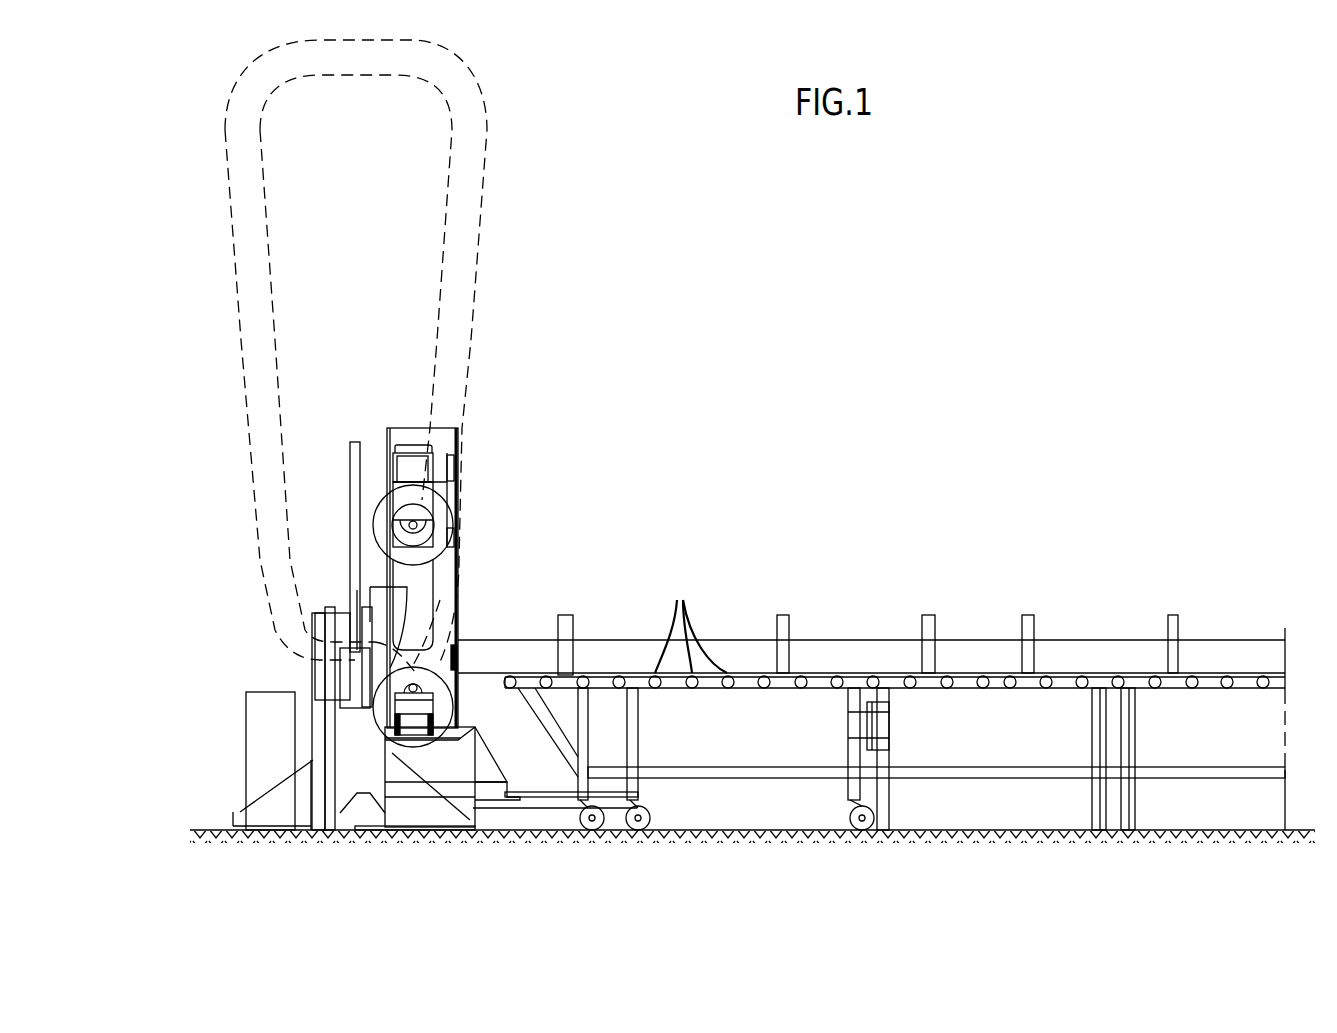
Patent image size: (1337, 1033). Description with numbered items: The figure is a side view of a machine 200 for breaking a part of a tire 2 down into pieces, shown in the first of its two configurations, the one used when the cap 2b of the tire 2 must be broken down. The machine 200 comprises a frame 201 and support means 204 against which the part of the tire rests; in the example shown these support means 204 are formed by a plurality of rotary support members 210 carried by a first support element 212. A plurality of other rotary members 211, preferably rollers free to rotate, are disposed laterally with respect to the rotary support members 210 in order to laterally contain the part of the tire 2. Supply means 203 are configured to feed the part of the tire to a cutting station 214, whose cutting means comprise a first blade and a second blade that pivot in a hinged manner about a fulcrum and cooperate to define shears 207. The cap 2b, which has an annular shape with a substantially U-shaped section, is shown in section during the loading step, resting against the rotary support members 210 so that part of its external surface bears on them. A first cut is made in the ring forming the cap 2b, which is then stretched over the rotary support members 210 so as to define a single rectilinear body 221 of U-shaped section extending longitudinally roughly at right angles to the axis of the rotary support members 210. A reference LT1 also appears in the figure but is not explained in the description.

The tire 2 is at (747, 640).
The cap 2b is at (222, 220).
The machine 200 is at (871, 577).
The frame 201 is at (353, 765).
The supply means 203 is at (372, 553).
The support means 204 is at (684, 622).
The shears 207 is at (347, 480).
The rotary support members 210 is at (684, 622).
The other rotary members 211 is at (1030, 613).
The first support element 212 is at (1210, 665).
The cutting station 214 is at (477, 602).
The single rectilinear body 221 is at (850, 640).
The transport level LT1 is at (305, 689).